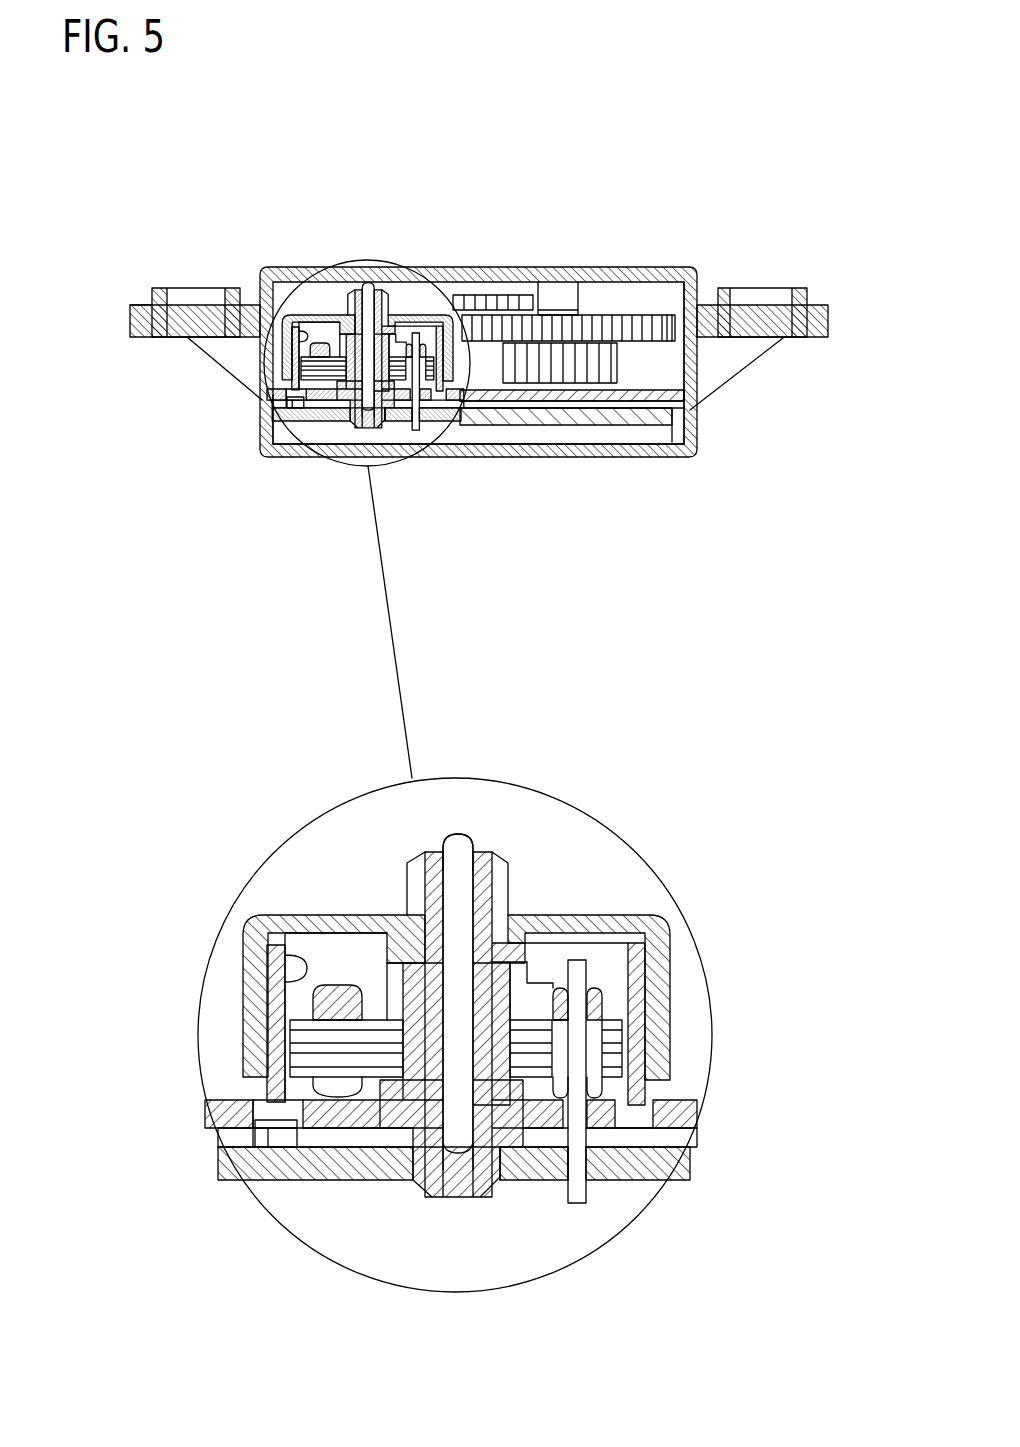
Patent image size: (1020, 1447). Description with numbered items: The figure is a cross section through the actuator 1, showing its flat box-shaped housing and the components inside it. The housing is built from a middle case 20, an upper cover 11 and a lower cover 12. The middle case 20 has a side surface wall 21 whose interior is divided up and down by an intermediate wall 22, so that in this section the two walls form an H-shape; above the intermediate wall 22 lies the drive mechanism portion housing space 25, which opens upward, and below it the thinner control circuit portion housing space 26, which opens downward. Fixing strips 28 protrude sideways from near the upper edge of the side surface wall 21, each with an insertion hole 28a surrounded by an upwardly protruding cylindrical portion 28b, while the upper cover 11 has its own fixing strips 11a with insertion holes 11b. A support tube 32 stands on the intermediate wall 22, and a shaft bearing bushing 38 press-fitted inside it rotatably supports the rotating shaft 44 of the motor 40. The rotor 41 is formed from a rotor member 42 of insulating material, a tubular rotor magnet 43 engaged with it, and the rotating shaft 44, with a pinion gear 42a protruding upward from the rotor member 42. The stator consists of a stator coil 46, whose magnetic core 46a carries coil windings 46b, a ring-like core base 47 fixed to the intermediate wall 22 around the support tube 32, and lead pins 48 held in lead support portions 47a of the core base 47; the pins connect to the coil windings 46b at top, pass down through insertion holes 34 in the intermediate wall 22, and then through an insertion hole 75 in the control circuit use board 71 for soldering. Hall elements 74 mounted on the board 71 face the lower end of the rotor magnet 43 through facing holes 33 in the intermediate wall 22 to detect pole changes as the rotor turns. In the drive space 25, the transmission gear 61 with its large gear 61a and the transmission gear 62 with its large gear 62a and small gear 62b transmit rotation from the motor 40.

The actuator 1 is at (222, 198).
The upper cover 11 is at (305, 268).
The fixing strip 11a is at (138, 304).
The insertion hole 11b is at (790, 300).
The lower cover 12 is at (560, 420).
The middle case 20 is at (697, 365).
The side surface wall 21 is at (262, 400).
The intermediate wall 22 is at (680, 1108).
The drive mechanism portion housing space 25 is at (602, 290).
The control circuit portion housing space 26 is at (620, 447).
The fixing strip 28 is at (830, 330).
The insertion hole 28a is at (186, 328).
The cylindrical portion 28b is at (160, 290).
The support tube 32 is at (333, 983).
The facing hole 33 is at (283, 1135).
The insertion hole 34 is at (630, 1150).
The shaft bearing bushing 38 is at (462, 940).
The motor 40 is at (300, 945).
The rotor 41 is at (668, 965).
The rotor member 42 is at (545, 988).
The pinion gear 42a is at (413, 873).
The rotor magnet 43 is at (300, 1000).
The rotating shaft 44 is at (460, 840).
The stator coil 46 is at (340, 1050).
The core 46a is at (262, 1125).
The coil windings 46b is at (275, 975).
The core base 47 is at (590, 990).
The lead support portion 47a is at (638, 1000).
The lead pin 48 is at (578, 1205).
The transmission gear 61 is at (472, 318).
The large gear 61a is at (497, 300).
The transmission gear 62 is at (640, 325).
The large gear 62a is at (657, 333).
The small gear 62b is at (525, 365).
The control circuit use board 71 is at (350, 1180).
The Hall element 74 is at (285, 1150).
The insertion hole 75 is at (590, 1165).